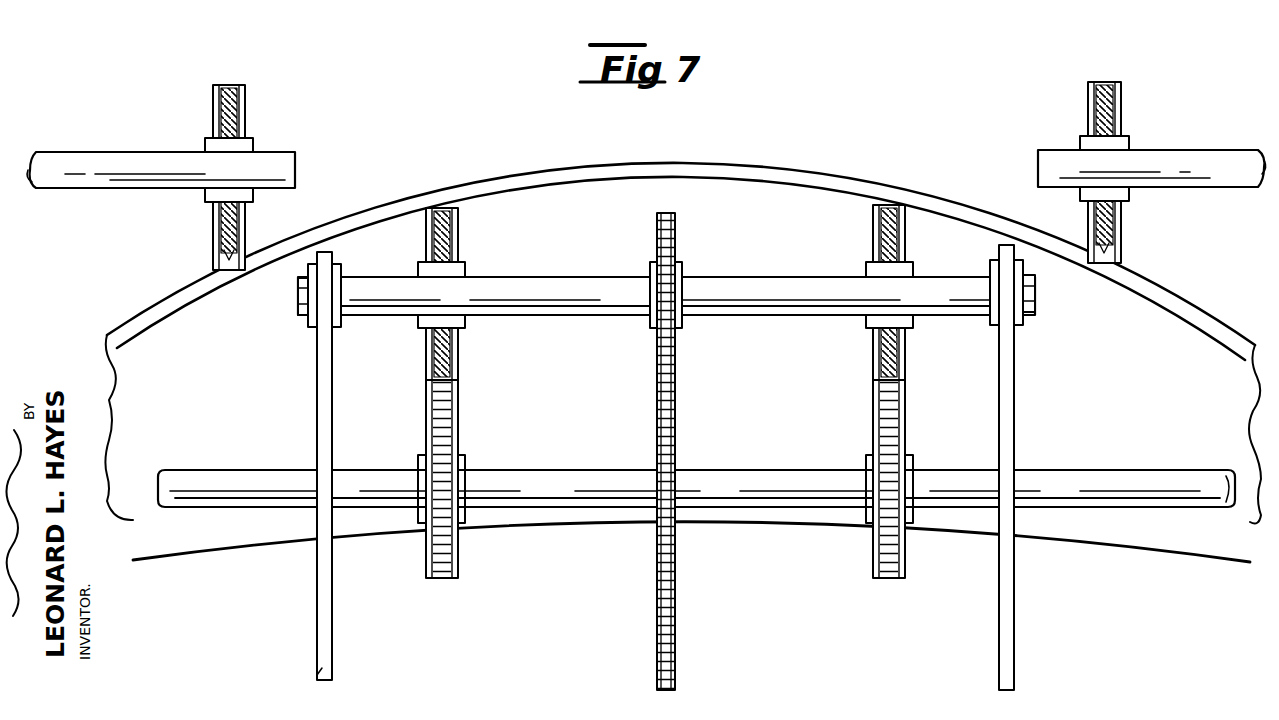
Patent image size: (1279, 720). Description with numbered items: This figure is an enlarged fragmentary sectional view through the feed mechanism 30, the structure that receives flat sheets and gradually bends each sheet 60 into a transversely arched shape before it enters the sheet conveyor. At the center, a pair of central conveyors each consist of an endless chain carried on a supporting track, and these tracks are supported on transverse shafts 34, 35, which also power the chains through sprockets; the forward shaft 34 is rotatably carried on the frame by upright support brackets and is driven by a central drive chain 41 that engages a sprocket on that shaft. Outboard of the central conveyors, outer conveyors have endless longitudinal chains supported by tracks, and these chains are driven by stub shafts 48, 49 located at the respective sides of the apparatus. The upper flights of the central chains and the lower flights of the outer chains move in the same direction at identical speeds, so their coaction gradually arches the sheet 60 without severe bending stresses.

The feed mechanism 30 is at (560, 568).
The forward transverse shaft 34 is at (560, 284).
The transverse shaft 35 is at (545, 476).
The central drive chain 41 is at (676, 390).
The stub shaft 48 is at (143, 189).
The stub shaft 49 is at (1183, 186).
The sheet 60 is at (775, 172).